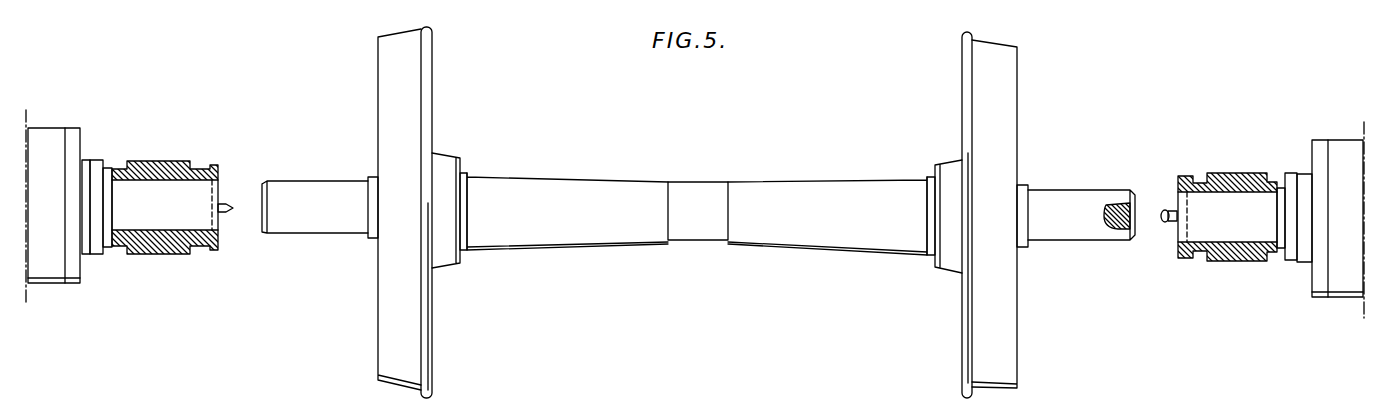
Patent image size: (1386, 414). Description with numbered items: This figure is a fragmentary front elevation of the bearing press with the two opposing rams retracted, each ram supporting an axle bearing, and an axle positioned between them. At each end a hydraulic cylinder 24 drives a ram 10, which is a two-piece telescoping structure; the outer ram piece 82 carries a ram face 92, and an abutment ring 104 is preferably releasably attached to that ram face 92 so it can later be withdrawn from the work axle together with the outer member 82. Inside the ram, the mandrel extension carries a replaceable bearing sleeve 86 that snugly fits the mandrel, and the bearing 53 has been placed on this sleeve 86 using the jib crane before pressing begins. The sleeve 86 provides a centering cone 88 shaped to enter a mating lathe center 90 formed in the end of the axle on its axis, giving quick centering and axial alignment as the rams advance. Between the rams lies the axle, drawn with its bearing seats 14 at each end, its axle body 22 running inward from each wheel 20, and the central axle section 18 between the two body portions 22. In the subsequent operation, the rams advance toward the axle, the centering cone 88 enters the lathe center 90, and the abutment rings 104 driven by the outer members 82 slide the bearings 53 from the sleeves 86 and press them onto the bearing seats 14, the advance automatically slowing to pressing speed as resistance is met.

The ram 10 is at (107, 167).
The bearing seat 14 is at (312, 190).
The axle center section 18 is at (688, 174).
The wheel 20 is at (383, 47).
The axle body 22 is at (547, 178).
The hydraulic cylinder 24 is at (45, 132).
The bearing 53 is at (180, 160).
The outer ram piece 82 is at (87, 257).
The bearing sleeve 86 is at (165, 218).
The centering cone 88 is at (232, 203).
The lathe center 90 is at (272, 214).
The ram face 92 is at (97, 163).
The abutment ring 104 is at (110, 167).